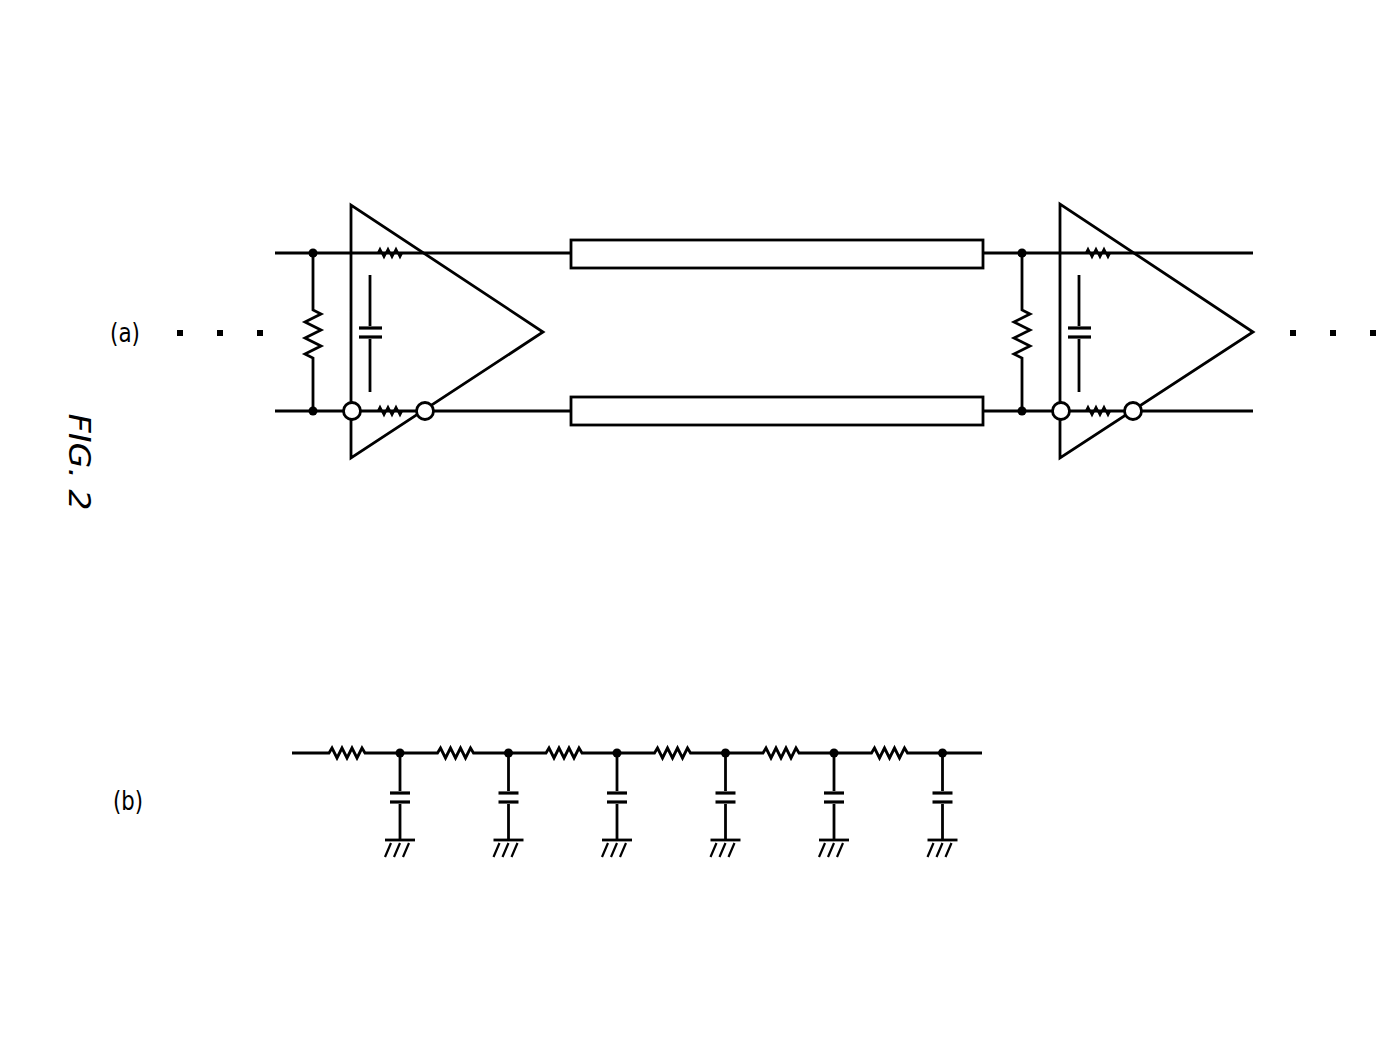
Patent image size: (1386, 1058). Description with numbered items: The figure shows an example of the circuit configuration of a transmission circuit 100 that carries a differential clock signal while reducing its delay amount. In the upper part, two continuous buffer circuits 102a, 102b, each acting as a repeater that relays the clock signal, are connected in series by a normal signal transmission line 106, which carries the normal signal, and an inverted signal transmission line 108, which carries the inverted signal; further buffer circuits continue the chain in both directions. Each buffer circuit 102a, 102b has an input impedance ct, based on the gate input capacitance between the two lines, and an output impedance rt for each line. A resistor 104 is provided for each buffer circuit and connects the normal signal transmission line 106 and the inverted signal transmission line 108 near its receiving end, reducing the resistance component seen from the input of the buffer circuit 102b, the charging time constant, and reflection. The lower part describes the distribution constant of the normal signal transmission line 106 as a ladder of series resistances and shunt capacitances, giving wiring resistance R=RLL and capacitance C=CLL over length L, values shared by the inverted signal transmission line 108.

The transmission circuit 100 is at (1200, 91).
The buffer circuit 102a is at (390, 224).
The buffer circuit 102b is at (1099, 223).
The resistor 104 is at (312, 311).
The normal signal transmission line 106 is at (813, 239).
The inverted signal transmission line 108 is at (813, 425).